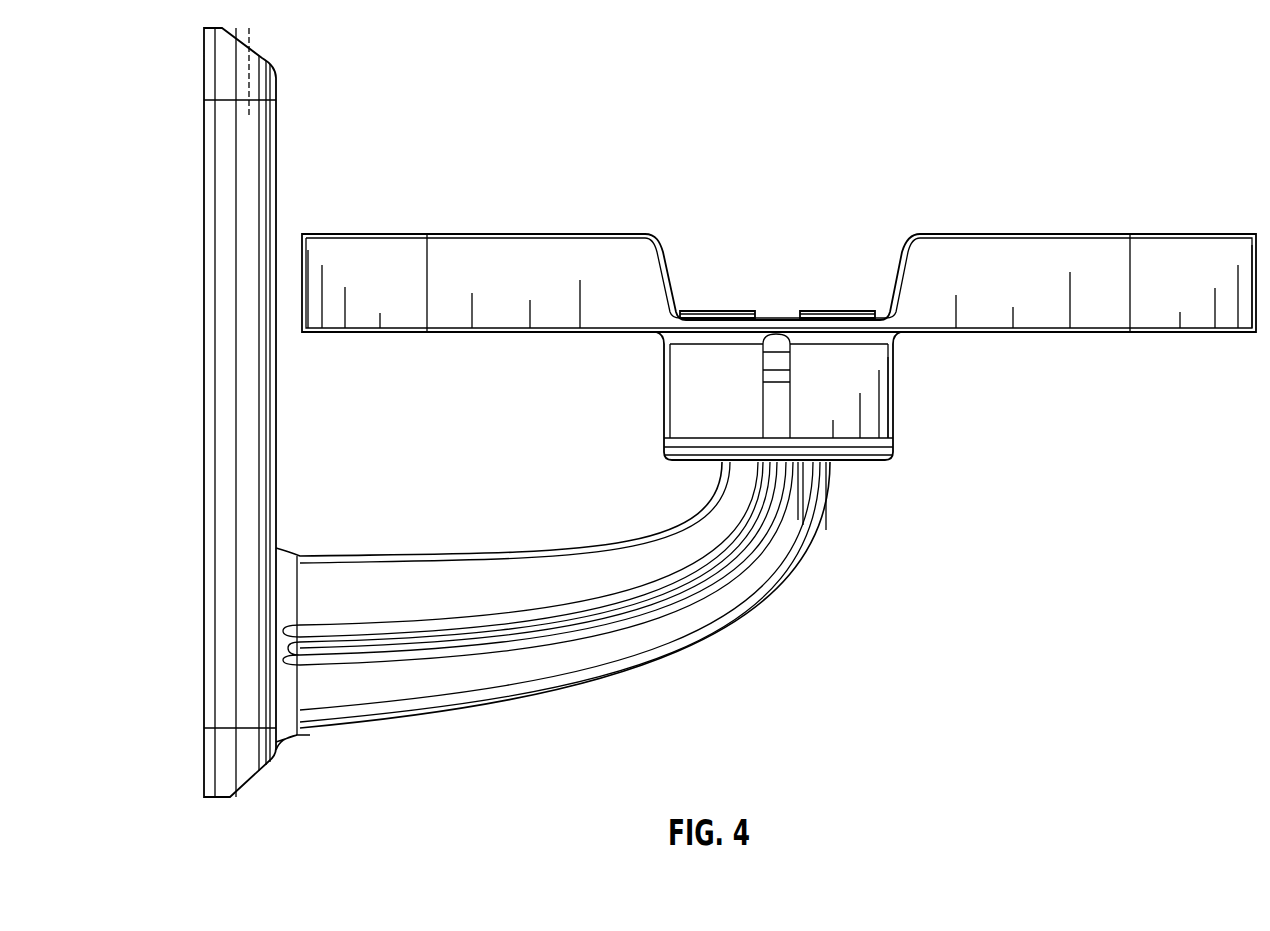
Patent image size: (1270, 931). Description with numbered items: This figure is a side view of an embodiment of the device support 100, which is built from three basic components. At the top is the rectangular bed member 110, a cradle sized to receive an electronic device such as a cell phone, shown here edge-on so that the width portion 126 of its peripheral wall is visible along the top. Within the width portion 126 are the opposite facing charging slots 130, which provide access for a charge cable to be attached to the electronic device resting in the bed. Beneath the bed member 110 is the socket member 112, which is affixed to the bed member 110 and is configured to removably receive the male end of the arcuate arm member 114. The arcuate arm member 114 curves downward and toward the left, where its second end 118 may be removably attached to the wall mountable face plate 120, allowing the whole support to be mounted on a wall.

The device support 100 is at (1102, 119).
The rectangular bed member 110 is at (1222, 234).
The socket member 112 is at (895, 402).
The arcuate arm member 114 is at (658, 676).
The second end 118 is at (316, 737).
The wall mountable face plate 120 is at (277, 430).
The width portion 126 is at (1043, 298).
The charging slots 130 is at (834, 306).